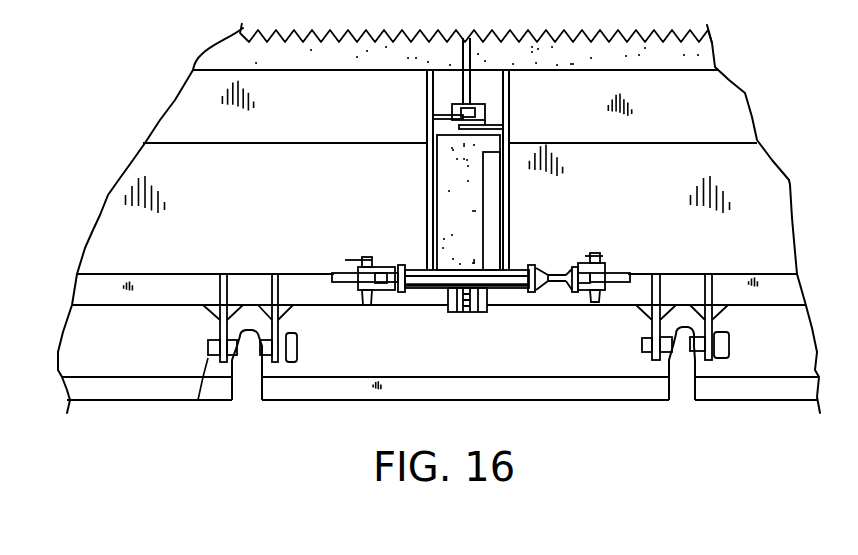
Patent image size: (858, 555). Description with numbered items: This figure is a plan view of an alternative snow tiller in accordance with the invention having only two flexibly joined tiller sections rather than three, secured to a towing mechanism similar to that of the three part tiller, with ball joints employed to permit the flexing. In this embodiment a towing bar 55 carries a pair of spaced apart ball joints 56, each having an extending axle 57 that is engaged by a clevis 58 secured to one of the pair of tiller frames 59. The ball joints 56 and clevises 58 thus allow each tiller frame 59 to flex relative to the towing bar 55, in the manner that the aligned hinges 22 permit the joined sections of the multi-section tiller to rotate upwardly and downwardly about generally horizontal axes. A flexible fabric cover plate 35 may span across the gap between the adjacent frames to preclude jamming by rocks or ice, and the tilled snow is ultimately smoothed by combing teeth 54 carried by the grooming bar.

The hinge 22 is at (480, 118).
The flexible fabric cover plate 35 is at (435, 183).
The combing teeth 54 is at (689, 38).
The towing bar 55 is at (521, 387).
The ball joint 56 is at (262, 350).
The axle 57 is at (208, 360).
The clevis 58 is at (218, 328).
The tiller frame 59 is at (117, 218).